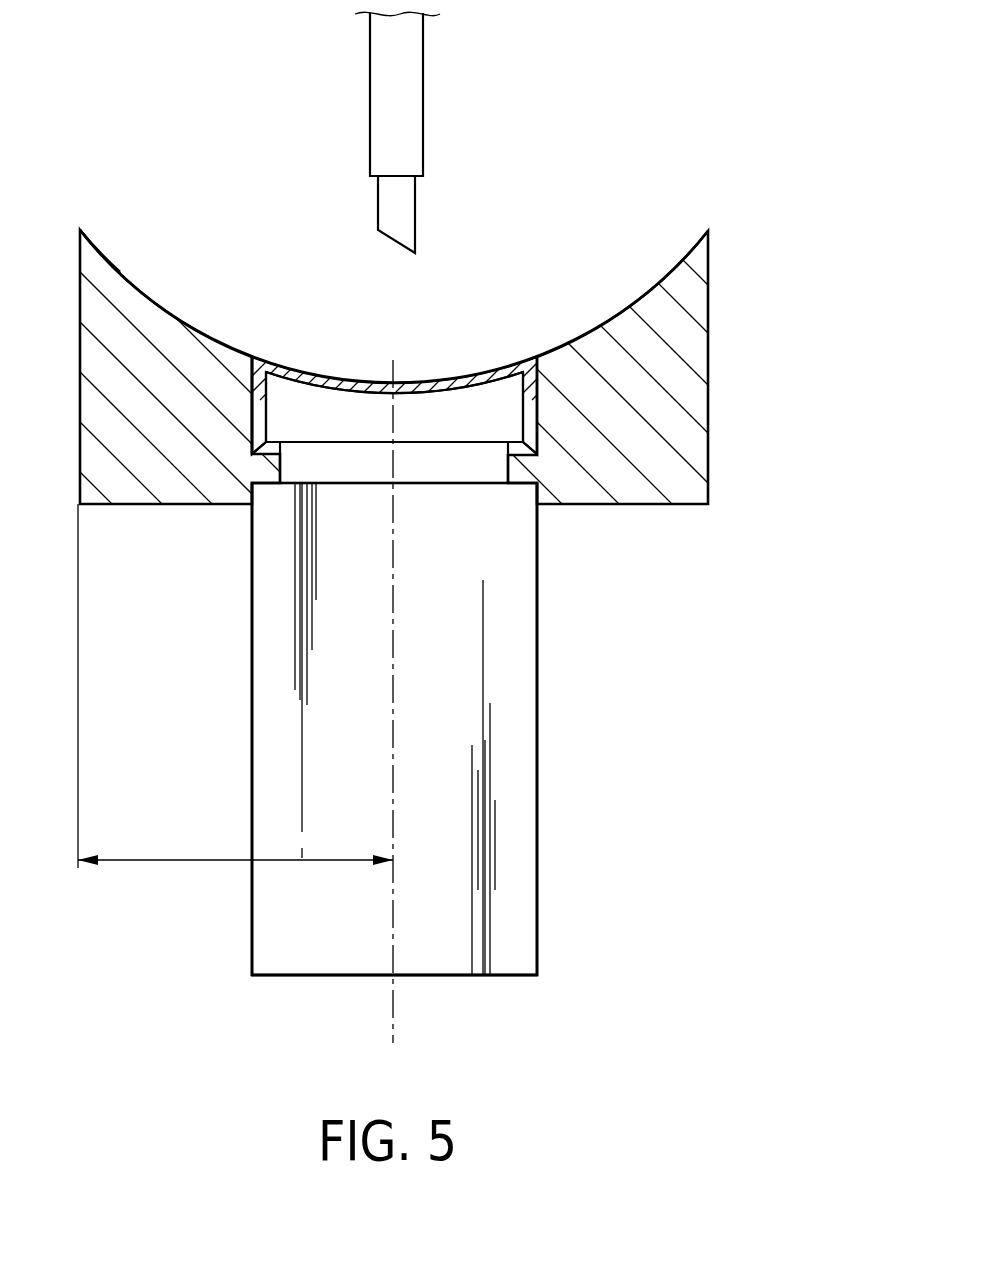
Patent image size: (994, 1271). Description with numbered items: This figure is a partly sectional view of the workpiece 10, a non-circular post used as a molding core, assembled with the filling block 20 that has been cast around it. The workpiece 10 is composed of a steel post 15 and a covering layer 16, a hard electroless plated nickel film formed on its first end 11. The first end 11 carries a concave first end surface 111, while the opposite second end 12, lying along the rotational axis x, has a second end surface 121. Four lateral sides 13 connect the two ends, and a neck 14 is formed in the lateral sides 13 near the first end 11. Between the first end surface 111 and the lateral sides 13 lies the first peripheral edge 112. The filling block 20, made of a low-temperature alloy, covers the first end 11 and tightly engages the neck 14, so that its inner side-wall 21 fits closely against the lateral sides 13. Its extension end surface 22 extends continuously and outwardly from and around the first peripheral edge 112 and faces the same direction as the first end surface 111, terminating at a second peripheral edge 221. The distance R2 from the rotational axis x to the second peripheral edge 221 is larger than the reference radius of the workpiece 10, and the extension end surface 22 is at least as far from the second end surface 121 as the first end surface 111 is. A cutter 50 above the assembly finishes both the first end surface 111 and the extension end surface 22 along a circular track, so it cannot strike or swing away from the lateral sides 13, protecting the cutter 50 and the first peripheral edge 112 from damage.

The workpiece 10 is at (246, 988).
The second end 12 is at (508, 933).
The second end surface 121 is at (503, 977).
The lateral sides 13 is at (538, 447).
The neck 14 is at (263, 472).
The post 15 is at (503, 627).
The covering layer 16 is at (540, 418).
The first end 11 is at (535, 371).
The first end surface 111 is at (455, 373).
The first peripheral edge 112 is at (252, 356).
The filling block 20 is at (718, 343).
The inner side-wall 21 is at (252, 392).
The extension end surface 22 is at (132, 282).
The second peripheral edge 221 is at (80, 230).
The cutter 50 is at (430, 97).
The rotational axis x is at (393, 712).
The distance R2 is at (235, 686).